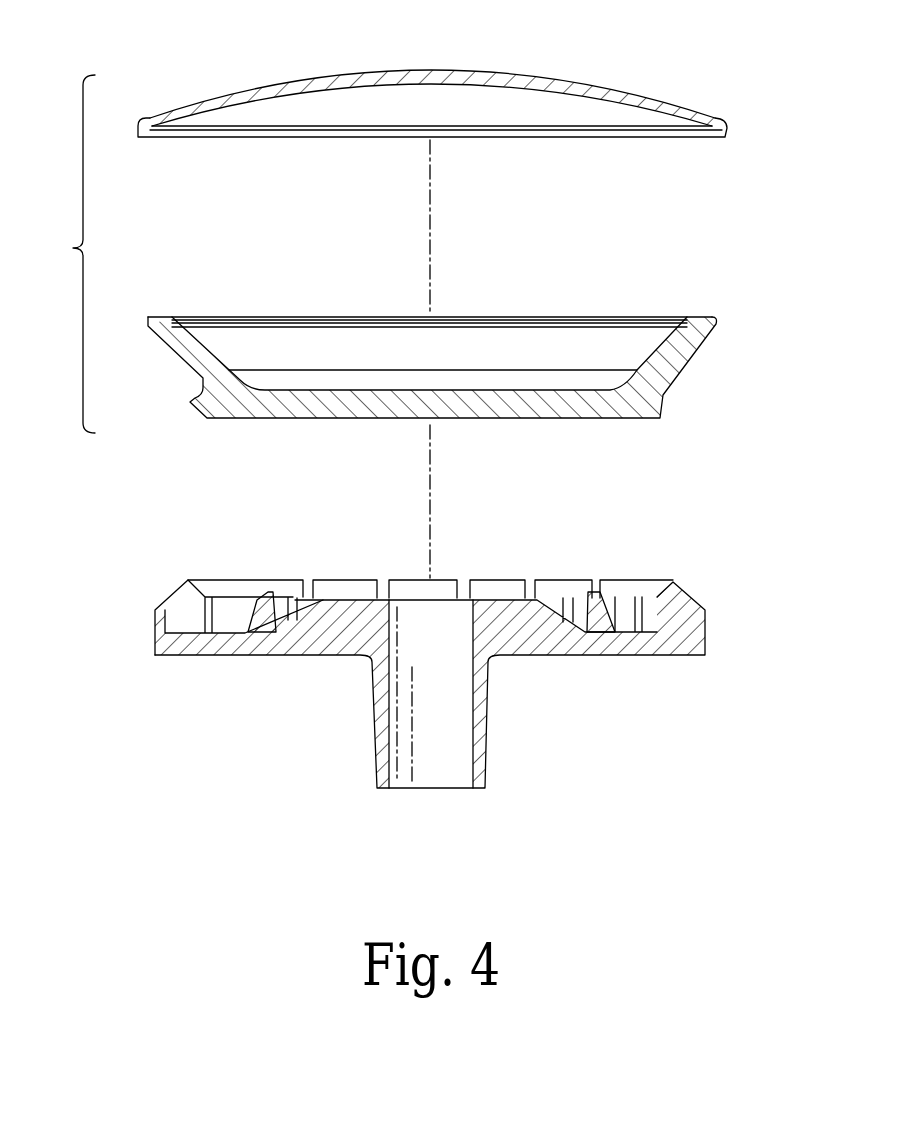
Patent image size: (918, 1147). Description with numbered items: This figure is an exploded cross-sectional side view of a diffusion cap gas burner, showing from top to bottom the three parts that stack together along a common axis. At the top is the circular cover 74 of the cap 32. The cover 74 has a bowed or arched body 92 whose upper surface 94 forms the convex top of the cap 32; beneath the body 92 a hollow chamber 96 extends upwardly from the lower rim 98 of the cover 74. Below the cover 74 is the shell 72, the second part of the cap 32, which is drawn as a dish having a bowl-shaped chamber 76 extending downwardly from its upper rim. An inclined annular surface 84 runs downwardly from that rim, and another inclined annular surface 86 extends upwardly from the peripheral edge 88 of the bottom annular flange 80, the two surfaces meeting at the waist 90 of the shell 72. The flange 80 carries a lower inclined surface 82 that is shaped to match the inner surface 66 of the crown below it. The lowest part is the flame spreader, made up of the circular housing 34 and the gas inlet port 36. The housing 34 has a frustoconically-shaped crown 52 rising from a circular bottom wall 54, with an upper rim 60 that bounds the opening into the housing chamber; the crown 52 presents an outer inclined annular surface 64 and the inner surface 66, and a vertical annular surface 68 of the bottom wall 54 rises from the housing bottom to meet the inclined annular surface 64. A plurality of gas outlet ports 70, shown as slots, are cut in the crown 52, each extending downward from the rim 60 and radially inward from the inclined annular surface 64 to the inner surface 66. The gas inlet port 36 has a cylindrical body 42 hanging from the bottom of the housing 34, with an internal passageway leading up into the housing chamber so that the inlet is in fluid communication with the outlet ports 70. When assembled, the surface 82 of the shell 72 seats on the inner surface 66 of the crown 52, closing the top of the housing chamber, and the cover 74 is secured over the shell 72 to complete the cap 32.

The cap 32 is at (68, 254).
The circular cover 74 is at (441, 99).
The upper surface 94 is at (452, 73).
The body 92 is at (552, 78).
The hollow chamber 96 is at (338, 92).
The lower rim 98 is at (729, 131).
The shell 72 is at (431, 390).
The inclined annular surface 84 is at (166, 342).
The bowl-shaped chamber 76 is at (246, 381).
The waist 90 is at (198, 392).
The inclined annular surface 86 is at (196, 408).
The bottom annular flange 80 is at (661, 383).
The peripheral edge 88 is at (666, 400).
The lower inclined surface 82 is at (662, 419).
The gas inlet port 36 is at (463, 695).
The gas outlet ports 70 is at (303, 580).
The inner surface 66 is at (490, 583).
The upper rim 60 is at (660, 580).
The crown 52 is at (680, 583).
The inclined annular surface 64 is at (690, 601).
The vertical annular surface 68 is at (710, 633).
The circular bottom wall 54 is at (710, 656).
The circular housing 34 is at (338, 652).
The cylindrical body 42 is at (487, 745).